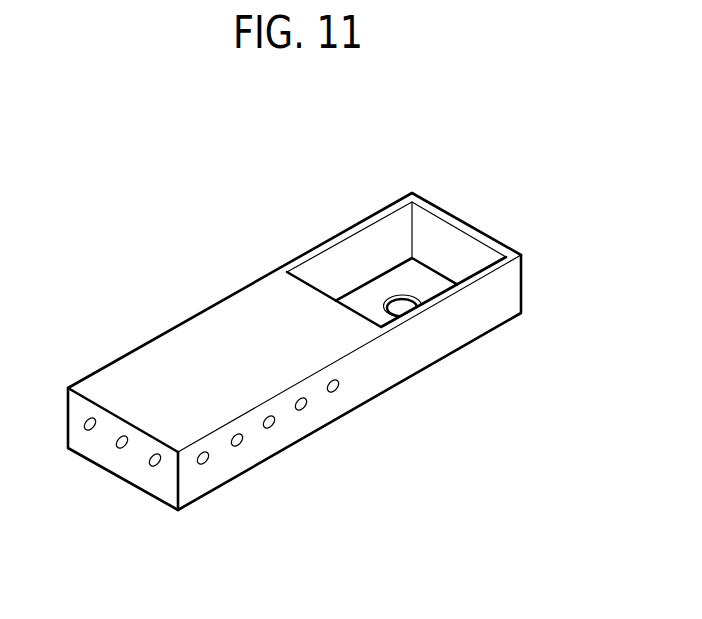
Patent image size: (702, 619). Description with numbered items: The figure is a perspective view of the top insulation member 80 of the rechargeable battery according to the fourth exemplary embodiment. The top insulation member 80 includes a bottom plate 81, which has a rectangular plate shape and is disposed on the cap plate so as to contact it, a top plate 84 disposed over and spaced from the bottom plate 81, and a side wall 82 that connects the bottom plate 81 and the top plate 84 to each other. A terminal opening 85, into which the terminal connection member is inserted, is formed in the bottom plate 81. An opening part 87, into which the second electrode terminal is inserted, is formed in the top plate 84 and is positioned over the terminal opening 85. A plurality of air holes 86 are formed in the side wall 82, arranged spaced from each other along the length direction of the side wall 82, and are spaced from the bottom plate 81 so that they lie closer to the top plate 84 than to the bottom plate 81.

The top insulation member 80 is at (280, 318).
The bottom plate 81 is at (405, 276).
The side wall 82 is at (343, 272).
The top plate 84 is at (195, 340).
The terminal opening 85 is at (418, 300).
The air holes 86 is at (119, 442).
The opening part 87 is at (305, 257).